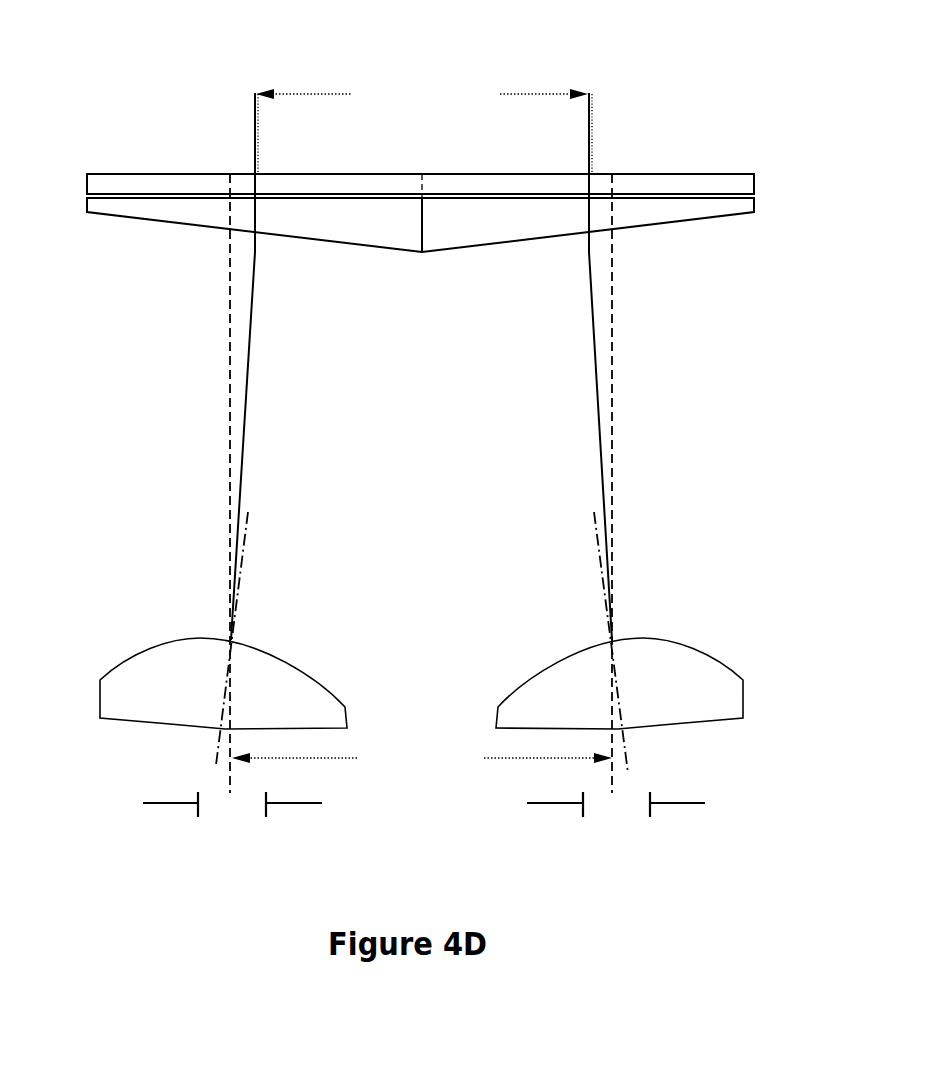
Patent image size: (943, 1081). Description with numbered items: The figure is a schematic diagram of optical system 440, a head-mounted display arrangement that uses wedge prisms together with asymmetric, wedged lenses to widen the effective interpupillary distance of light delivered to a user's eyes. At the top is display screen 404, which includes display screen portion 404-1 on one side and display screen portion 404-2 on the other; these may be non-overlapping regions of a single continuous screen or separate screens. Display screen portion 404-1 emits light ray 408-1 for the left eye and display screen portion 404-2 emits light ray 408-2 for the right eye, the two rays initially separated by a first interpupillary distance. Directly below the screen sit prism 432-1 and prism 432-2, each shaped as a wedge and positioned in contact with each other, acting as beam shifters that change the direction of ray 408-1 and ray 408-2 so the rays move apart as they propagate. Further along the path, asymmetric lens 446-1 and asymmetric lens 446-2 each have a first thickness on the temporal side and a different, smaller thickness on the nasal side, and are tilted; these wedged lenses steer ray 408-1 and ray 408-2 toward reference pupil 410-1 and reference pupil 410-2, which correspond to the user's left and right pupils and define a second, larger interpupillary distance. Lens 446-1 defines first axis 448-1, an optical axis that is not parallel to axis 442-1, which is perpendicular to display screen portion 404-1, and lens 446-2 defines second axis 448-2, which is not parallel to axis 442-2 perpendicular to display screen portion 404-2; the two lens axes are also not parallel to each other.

The optical system 440 is at (153, 50).
The display screen 404 is at (354, 168).
The display screen portion 404-1 is at (130, 172).
The display screen portion 404-2 is at (712, 172).
The prism 432-1 is at (123, 207).
The prism 432-2 is at (719, 207).
The light ray 408-1 is at (249, 363).
The light ray 408-2 is at (596, 364).
The axis 442-1 is at (229, 538).
The axis 442-2 is at (614, 534).
The first axis 448-1 is at (249, 507).
The second axis 448-2 is at (594, 513).
The asymmetric lens 446-1 is at (127, 680).
The asymmetric lens 446-2 is at (727, 685).
The reference pupil 410-1 is at (225, 832).
The reference pupil 410-2 is at (618, 834).